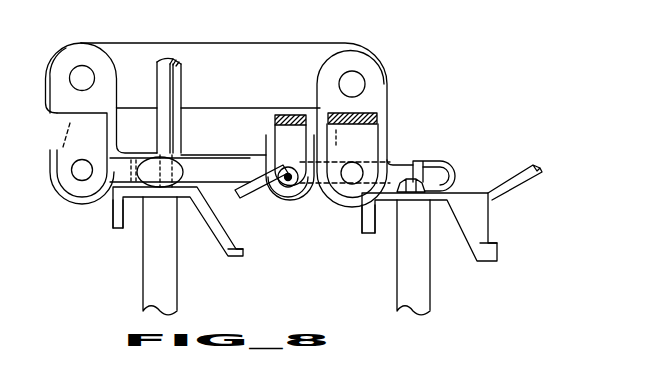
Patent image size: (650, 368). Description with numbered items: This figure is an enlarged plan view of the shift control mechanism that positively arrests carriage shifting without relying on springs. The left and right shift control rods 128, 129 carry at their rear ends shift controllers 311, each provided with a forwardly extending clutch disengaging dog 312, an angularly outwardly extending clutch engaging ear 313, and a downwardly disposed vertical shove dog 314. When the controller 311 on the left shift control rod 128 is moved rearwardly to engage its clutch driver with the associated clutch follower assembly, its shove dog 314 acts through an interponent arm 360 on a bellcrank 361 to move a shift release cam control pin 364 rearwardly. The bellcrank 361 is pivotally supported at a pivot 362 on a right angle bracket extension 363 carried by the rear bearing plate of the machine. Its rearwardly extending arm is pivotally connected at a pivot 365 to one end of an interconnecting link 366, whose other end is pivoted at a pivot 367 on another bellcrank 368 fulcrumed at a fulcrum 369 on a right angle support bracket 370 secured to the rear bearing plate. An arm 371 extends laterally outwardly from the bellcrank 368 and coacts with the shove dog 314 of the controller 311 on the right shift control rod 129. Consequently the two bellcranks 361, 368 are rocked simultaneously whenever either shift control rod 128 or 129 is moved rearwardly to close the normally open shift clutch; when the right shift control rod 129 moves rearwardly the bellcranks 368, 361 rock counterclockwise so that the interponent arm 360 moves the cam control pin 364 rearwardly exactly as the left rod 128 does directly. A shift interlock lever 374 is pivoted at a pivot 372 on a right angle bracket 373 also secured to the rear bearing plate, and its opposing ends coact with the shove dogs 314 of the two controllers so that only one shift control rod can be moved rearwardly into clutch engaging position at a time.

The left shift control rod 128 is at (157, 261).
The right shift control rod 129 is at (412, 297).
The shift controller 311 is at (195, 221).
The clutch disengaging dog 312 is at (243, 253).
The clutch engaging ear 313 is at (546, 172).
The shove dog 314 is at (147, 202).
The interponent arm 360 is at (156, 160).
The bellcrank 361 is at (57, 192).
The pivot 362 is at (80, 170).
The right angle bracket extension 363 is at (85, 115).
The shift release cam control pin 364 is at (166, 120).
The pivot connection 365 is at (82, 78).
The interconnecting link 366 is at (250, 63).
The pivot 367 is at (354, 82).
The bellcrank 368 is at (385, 160).
The fulcrum 369 is at (352, 186).
The right angle support bracket 370 is at (364, 139).
The arm 371 is at (445, 180).
The pivot 372 is at (288, 193).
The right angle bracket 373 is at (290, 138).
The shift interlock lever 374 is at (240, 170).